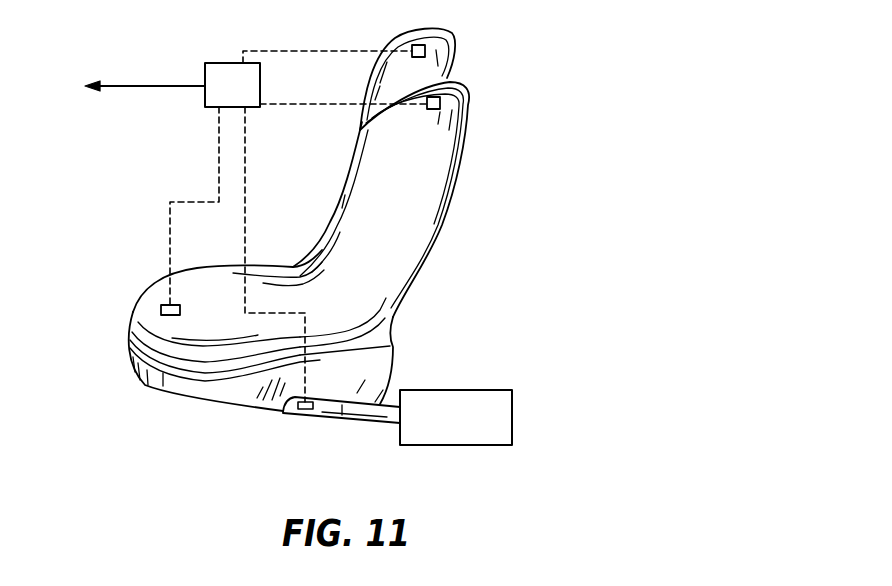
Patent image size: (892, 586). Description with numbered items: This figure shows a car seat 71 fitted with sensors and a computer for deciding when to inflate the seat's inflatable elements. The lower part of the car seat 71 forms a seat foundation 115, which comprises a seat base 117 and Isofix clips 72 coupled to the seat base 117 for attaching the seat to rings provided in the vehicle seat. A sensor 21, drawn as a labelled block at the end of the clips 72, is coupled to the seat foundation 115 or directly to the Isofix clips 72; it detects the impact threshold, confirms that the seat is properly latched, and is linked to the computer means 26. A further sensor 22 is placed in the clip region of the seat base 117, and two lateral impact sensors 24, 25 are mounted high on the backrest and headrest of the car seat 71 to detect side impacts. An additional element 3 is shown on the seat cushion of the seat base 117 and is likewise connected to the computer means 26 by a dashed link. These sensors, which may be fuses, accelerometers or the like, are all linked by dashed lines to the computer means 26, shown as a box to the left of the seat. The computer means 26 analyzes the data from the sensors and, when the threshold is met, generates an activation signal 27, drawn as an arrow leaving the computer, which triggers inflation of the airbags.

The seat cushion sensor 3 is at (161, 310).
The sensor 21 is at (493, 390).
The sensor 22 is at (305, 411).
The lateral impact sensor 24 is at (440, 103).
The lateral impact sensor 25 is at (425, 51).
The computer means 26 is at (228, 63).
The activation signal 27 is at (155, 84).
The car seat 71 is at (412, 163).
The Isofix clips 72 is at (342, 412).
The seat foundation 115 is at (398, 335).
The seat base 117 is at (392, 380).